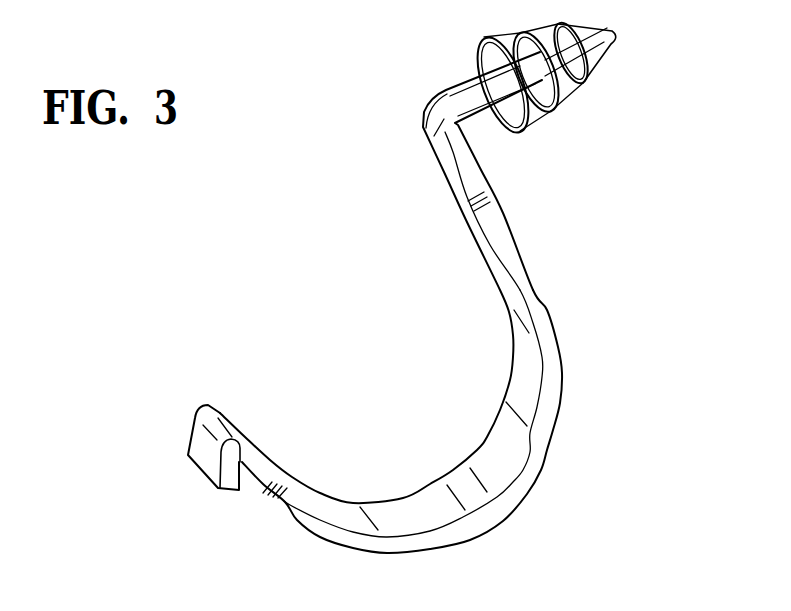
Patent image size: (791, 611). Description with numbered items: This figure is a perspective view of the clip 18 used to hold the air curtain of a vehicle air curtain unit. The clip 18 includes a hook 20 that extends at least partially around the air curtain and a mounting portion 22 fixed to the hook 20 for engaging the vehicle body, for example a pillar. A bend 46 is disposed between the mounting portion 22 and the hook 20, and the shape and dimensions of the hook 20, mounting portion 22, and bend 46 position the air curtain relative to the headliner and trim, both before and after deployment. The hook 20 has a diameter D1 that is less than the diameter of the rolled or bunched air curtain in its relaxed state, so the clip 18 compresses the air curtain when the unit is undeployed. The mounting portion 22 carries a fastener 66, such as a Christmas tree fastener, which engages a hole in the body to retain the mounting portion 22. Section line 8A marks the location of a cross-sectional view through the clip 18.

The clip 18 is at (592, 425).
The hook 20 is at (292, 506).
The mounting portion 22 is at (514, 72).
The bend 46 is at (523, 475).
The fastener 66 is at (567, 78).
The diameter of the hook D1 is at (506, 305).
The section line 8A is at (478, 228).